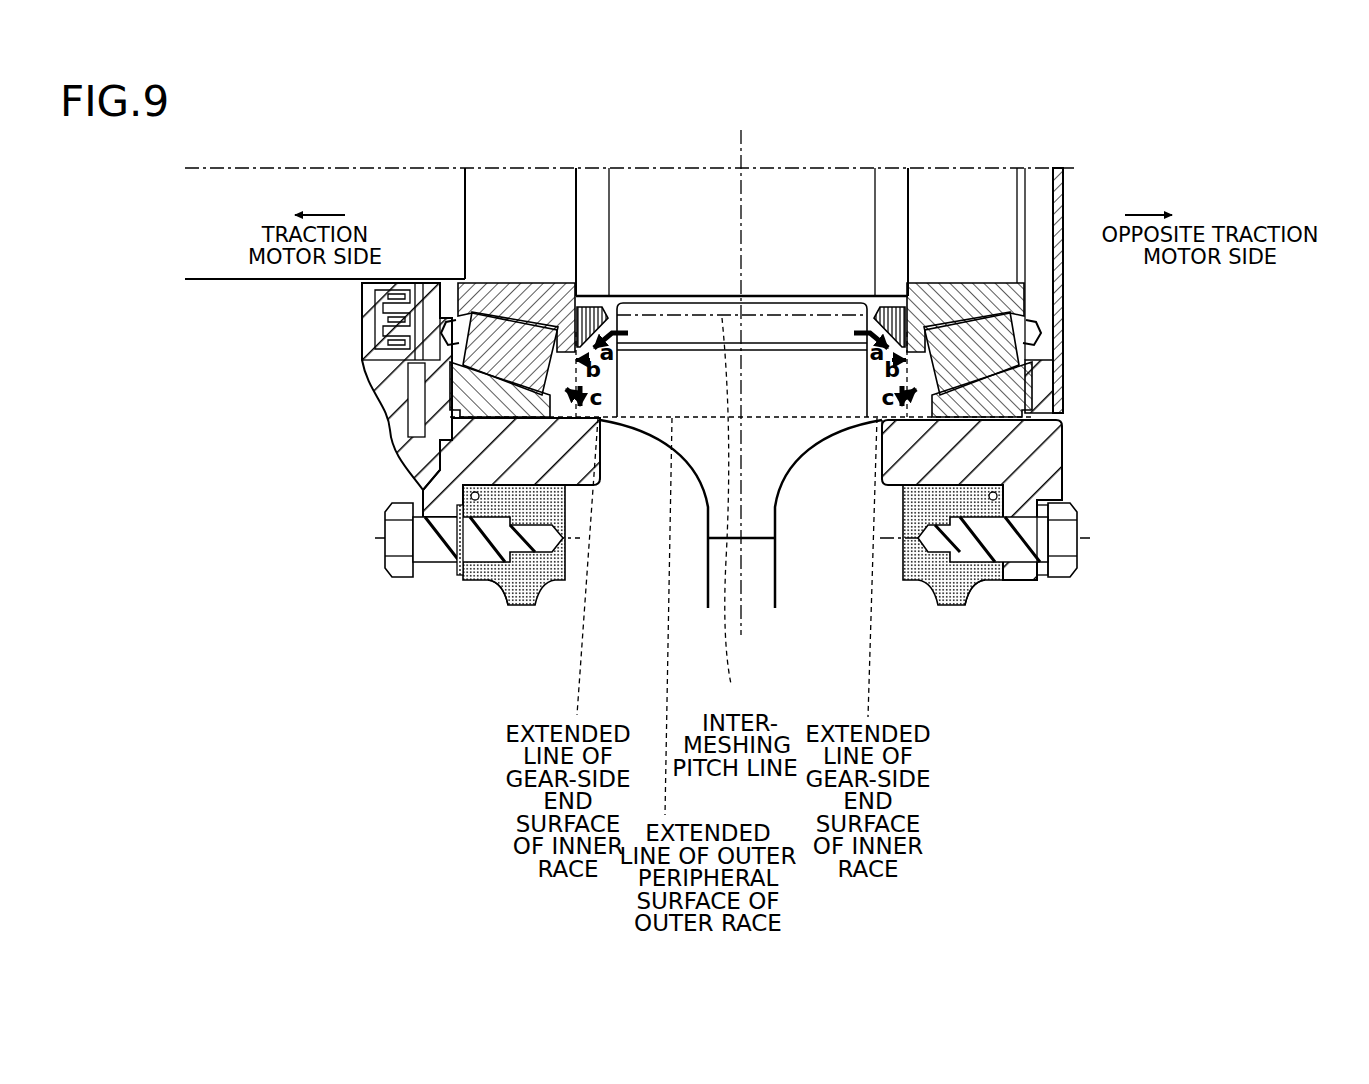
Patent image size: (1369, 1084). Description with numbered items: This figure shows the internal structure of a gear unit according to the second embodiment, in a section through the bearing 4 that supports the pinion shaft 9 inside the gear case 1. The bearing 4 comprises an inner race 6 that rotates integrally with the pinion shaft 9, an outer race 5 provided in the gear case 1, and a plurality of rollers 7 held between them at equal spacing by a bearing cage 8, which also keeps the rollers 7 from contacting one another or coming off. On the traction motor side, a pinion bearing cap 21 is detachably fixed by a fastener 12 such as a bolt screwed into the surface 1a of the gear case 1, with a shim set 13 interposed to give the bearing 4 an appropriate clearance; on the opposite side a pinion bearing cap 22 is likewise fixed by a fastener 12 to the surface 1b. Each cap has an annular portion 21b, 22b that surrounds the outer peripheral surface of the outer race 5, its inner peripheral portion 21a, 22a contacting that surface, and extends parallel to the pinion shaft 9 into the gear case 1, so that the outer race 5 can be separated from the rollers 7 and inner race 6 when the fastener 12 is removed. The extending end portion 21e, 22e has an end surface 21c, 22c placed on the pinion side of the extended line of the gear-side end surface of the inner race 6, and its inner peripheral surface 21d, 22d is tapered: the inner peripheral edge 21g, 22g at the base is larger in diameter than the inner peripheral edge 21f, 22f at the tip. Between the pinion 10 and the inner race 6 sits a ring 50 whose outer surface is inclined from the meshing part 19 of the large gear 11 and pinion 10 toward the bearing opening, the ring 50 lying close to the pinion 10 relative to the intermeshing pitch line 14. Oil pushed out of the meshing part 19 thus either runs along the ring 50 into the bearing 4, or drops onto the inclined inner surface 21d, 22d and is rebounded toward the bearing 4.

The gear case 1 is at (543, 575).
The surface on the traction motor side 1a is at (500, 603).
The surface opposite to the traction motor side 1b is at (960, 605).
The bearing 4 is at (436, 369).
The outer race 5 is at (452, 412).
The inner race 6 is at (492, 292).
The rollers 7 is at (473, 356).
The bearing cage 8 is at (452, 330).
The pinion shaft 9 is at (229, 187).
The pinion 10 is at (677, 198).
The large gear 11 is at (698, 450).
The fastener 12 is at (402, 566).
The shim set 13 is at (461, 572).
The intermeshing pitch line 14 is at (737, 515).
The meshing part 19 is at (783, 368).
The pinion bearing cap 21 is at (480, 445).
The inner peripheral portion 21a is at (462, 455).
The annular portion 21b is at (440, 490).
The end surface 21c is at (420, 512).
The inner peripheral surface 21d is at (505, 452).
The end portion 21e is at (523, 575).
The inner peripheral edge 21f is at (620, 422).
The inner peripheral edge 21g is at (592, 437).
The pinion bearing cap 22 is at (1033, 437).
The inner peripheral portion 22a is at (977, 468).
The annular portion 22b is at (965, 517).
The end surface 22c is at (1045, 560).
The inner peripheral surface 22d is at (1045, 443).
The end portion 22e is at (983, 570).
The inner peripheral edge 22f is at (865, 422).
The inner peripheral edge 22g is at (880, 437).
The ring 50 is at (587, 297).